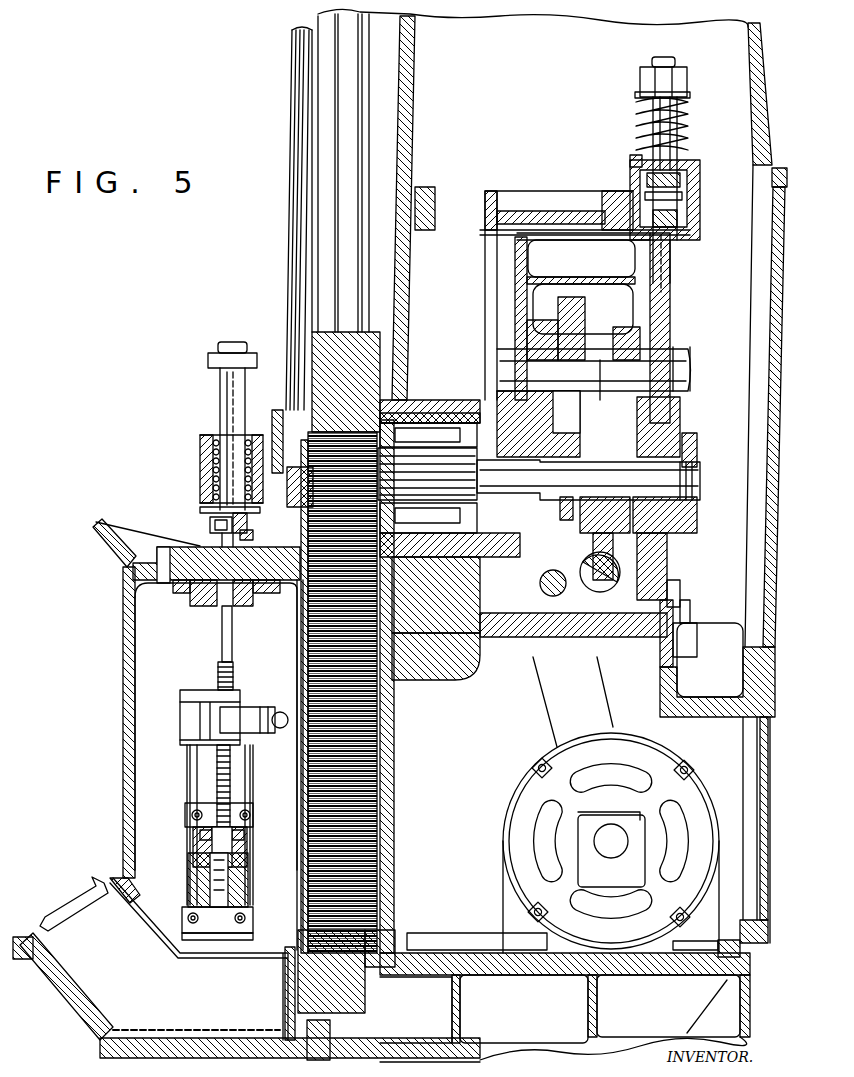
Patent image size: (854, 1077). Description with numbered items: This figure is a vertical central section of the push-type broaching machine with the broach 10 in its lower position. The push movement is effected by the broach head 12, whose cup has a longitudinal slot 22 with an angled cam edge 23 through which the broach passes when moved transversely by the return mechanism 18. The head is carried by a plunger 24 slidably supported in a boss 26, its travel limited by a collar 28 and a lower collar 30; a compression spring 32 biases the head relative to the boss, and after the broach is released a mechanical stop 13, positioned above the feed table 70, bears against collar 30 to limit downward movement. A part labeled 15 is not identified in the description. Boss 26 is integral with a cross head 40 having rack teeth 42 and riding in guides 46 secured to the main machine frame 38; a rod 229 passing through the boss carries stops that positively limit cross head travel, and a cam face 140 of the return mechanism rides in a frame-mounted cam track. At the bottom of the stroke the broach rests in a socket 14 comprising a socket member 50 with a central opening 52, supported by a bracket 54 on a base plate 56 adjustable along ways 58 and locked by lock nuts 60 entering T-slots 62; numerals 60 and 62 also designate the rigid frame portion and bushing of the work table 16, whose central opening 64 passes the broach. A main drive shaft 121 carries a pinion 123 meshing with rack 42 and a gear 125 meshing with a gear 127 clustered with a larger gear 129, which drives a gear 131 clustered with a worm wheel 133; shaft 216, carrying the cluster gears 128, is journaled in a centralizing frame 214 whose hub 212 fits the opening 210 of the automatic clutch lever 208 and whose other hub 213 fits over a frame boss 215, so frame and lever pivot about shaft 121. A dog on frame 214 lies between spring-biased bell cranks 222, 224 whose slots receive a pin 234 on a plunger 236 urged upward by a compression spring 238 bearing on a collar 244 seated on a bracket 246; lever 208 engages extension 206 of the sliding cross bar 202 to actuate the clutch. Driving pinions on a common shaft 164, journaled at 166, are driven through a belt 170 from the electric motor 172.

The broach 10 is at (215, 669).
The broach head 12 is at (198, 512).
The mechanical stop 13 is at (253, 539).
The socket 14 is at (192, 841).
The cover lip 15 is at (93, 530).
The work table 16 is at (197, 608).
The return mechanism 18 is at (180, 701).
The longitudinal slot 22 is at (222, 521).
The slot edge 23 is at (223, 515).
The plunger 24 is at (218, 389).
The boss 26 is at (200, 451).
The collar 28 is at (212, 352).
The lower collar 30 is at (252, 513).
The compression spring 32 is at (200, 471).
The main machine frame 38 is at (414, 78).
The cross head 40 is at (360, 350).
The rack teeth 42 is at (400, 733).
The guides 46 is at (350, 50).
The socket member 50 is at (248, 841).
The central opening 52 is at (242, 836).
The bracket 54 is at (248, 866).
The base plate 56 is at (190, 814).
The ways 58 is at (188, 761).
The lock nuts 60 is at (190, 589).
The T-slots 62 is at (235, 612).
The central opening 64 is at (222, 607).
The feed table 70 is at (150, 550).
The main drive shaft 121 is at (427, 474).
The pinion 123 is at (428, 447).
The gear 125 is at (588, 480).
The gear 127 is at (540, 336).
The cluster gear 128 is at (600, 395).
The larger gear 129 is at (582, 310).
The gear 131 is at (565, 519).
The worm wheel 133 is at (647, 369).
The cam face 140 is at (272, 713).
The common shaft 164 is at (548, 591).
The journal 166 is at (580, 576).
The belt 170 is at (606, 699).
The electric motor 172 is at (522, 793).
The cross bar 202 is at (675, 666).
The extension 206 is at (690, 593).
The automatic clutch lever 208 is at (690, 573).
The central opening 210 is at (690, 440).
The hub 212 is at (672, 440).
The hub 213 is at (490, 425).
The centralizing frame 214 is at (672, 302).
The frame boss 215 is at (480, 420).
The shaft 216 is at (594, 403).
The bell crank 222 is at (450, 513).
The bell crank 224 is at (675, 256).
The rod 229 is at (290, 218).
The pin 234 is at (684, 201).
The plunger 236 is at (640, 121).
The compression spring 238 is at (690, 119).
The collar 244 is at (630, 158).
The bracket 246 is at (632, 181).